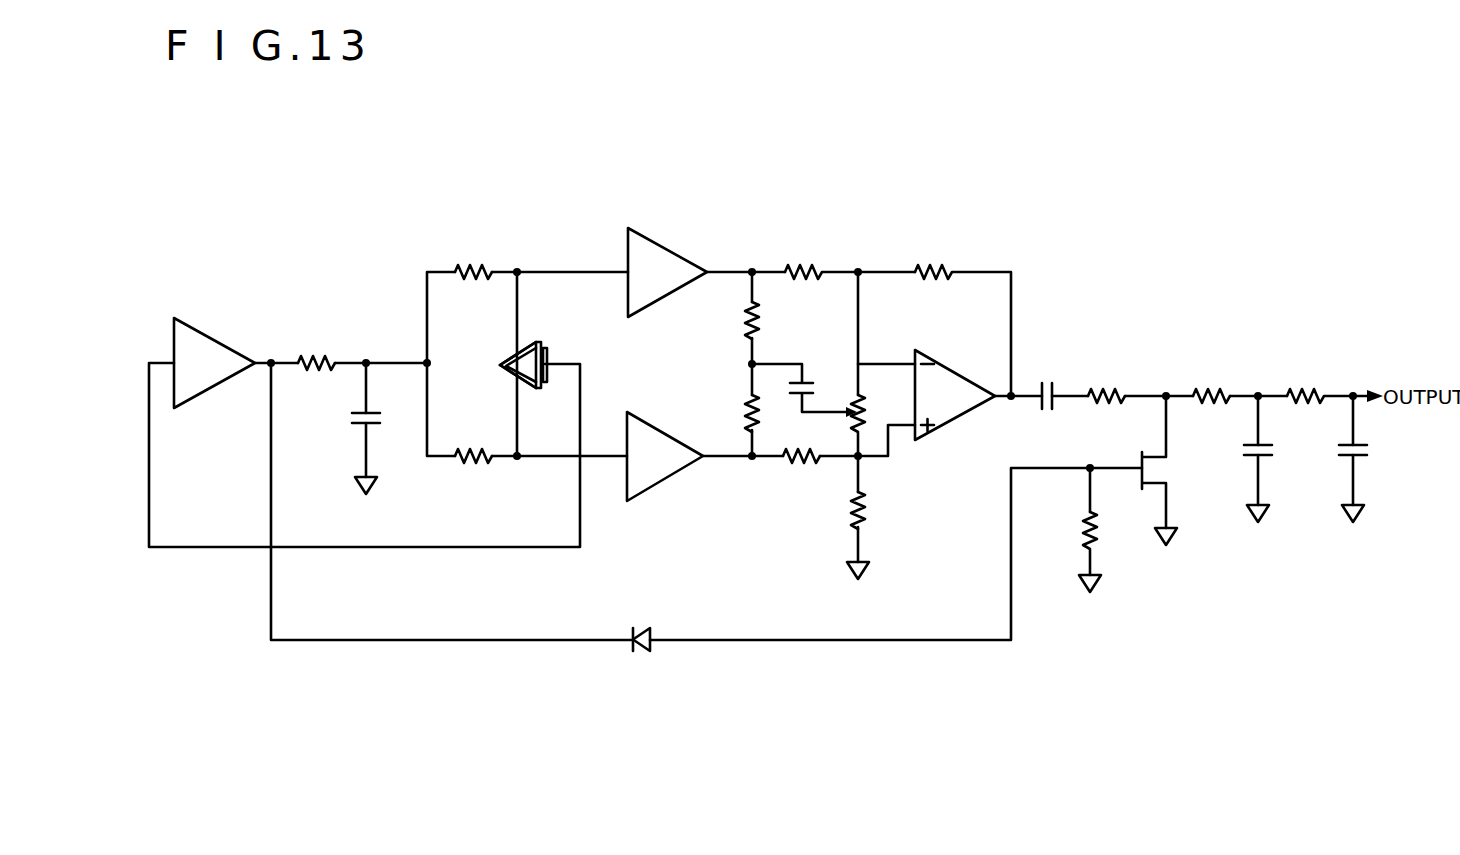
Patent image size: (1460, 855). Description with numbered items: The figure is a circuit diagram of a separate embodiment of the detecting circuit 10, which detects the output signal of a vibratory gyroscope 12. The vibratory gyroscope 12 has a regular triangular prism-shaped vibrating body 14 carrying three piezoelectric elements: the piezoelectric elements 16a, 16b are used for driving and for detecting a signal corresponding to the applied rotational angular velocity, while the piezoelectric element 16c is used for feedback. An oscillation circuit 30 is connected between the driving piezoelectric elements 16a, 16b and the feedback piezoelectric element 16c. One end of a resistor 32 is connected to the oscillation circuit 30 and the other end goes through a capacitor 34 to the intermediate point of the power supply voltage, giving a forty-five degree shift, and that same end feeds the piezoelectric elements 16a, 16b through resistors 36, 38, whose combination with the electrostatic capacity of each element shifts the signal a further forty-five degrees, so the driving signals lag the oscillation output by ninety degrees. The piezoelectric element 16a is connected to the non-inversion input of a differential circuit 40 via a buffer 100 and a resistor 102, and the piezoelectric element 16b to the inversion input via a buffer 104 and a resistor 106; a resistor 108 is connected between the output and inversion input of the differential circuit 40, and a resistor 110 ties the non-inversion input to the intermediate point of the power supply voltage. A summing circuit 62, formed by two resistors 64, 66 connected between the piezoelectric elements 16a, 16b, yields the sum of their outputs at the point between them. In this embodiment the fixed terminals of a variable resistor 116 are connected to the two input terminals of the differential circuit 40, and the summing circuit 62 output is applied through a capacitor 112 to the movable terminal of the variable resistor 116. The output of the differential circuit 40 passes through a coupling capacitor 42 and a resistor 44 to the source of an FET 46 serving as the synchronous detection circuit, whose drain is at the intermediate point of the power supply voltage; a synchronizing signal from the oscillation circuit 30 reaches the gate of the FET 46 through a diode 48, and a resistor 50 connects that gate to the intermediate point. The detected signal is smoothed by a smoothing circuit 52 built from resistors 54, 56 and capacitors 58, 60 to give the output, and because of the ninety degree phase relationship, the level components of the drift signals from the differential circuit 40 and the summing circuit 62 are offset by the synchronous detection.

The detecting circuit 10 is at (297, 163).
The vibratory gyroscope 12 is at (494, 360).
The vibrating body 14 is at (530, 380).
The piezoelectric element 16a is at (502, 382).
The piezoelectric element 16b is at (510, 347).
The piezoelectric element 16c is at (544, 357).
The oscillation circuit 30 is at (208, 343).
The resistor 32 is at (320, 358).
The capacitor 34 is at (353, 427).
The resistor 36 is at (470, 463).
The resistor 38 is at (477, 265).
The differential circuit 40 is at (952, 410).
The coupling capacitor 42 is at (1062, 385).
The resistor 44 is at (1113, 387).
The FET 46 is at (1140, 480).
The diode 48 is at (633, 648).
The resistor 50 is at (1083, 528).
The smoothing circuit 52 is at (1259, 382).
The resistor 54 is at (1210, 388).
The resistor 56 is at (1323, 388).
The capacitor 58 is at (1263, 460).
The capacitor 60 is at (1360, 460).
The summing circuit 62 is at (760, 256).
The resistor 64 is at (745, 317).
The resistor 66 is at (745, 406).
The buffer 100 is at (665, 468).
The resistor 102 is at (800, 465).
The buffer 104 is at (667, 267).
The resistor 106 is at (820, 267).
The resistor 108 is at (940, 270).
The resistor 110 is at (895, 503).
The capacitor 112 is at (797, 395).
The variable resistor 116 is at (851, 398).